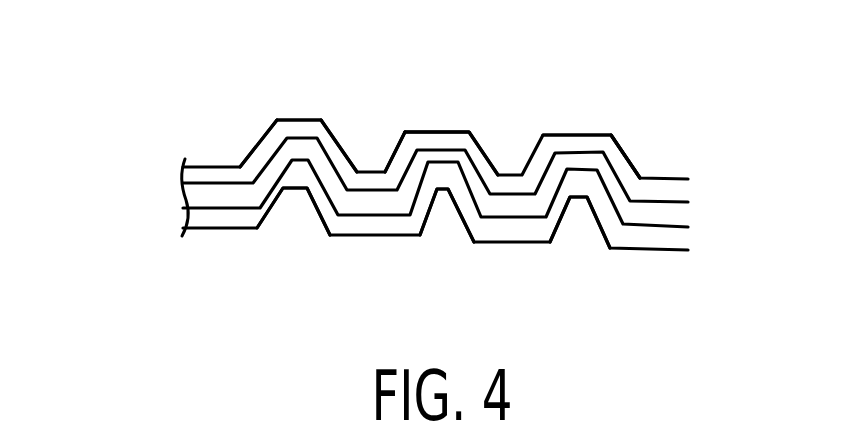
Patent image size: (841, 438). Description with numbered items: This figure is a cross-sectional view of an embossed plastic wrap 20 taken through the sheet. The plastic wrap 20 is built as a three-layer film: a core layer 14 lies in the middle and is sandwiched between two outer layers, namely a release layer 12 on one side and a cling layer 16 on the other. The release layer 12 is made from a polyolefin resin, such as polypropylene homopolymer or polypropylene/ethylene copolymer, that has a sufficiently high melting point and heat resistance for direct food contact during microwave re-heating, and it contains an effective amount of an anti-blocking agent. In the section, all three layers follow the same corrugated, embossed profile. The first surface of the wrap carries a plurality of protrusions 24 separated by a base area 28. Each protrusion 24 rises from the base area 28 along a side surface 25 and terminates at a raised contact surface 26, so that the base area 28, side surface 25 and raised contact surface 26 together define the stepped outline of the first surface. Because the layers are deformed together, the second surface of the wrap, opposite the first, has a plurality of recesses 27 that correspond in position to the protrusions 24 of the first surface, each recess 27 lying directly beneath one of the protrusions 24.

The plastic wrap 20 is at (104, 195).
The release layer 12 is at (686, 192).
The core layer 14 is at (686, 212).
The cling layer 16 is at (676, 238).
The protrusions 24 is at (470, 130).
The side surface 25 is at (253, 146).
The raised contact surface 26 is at (297, 119).
The recesses 27 is at (295, 190).
The base area 28 is at (187, 158).